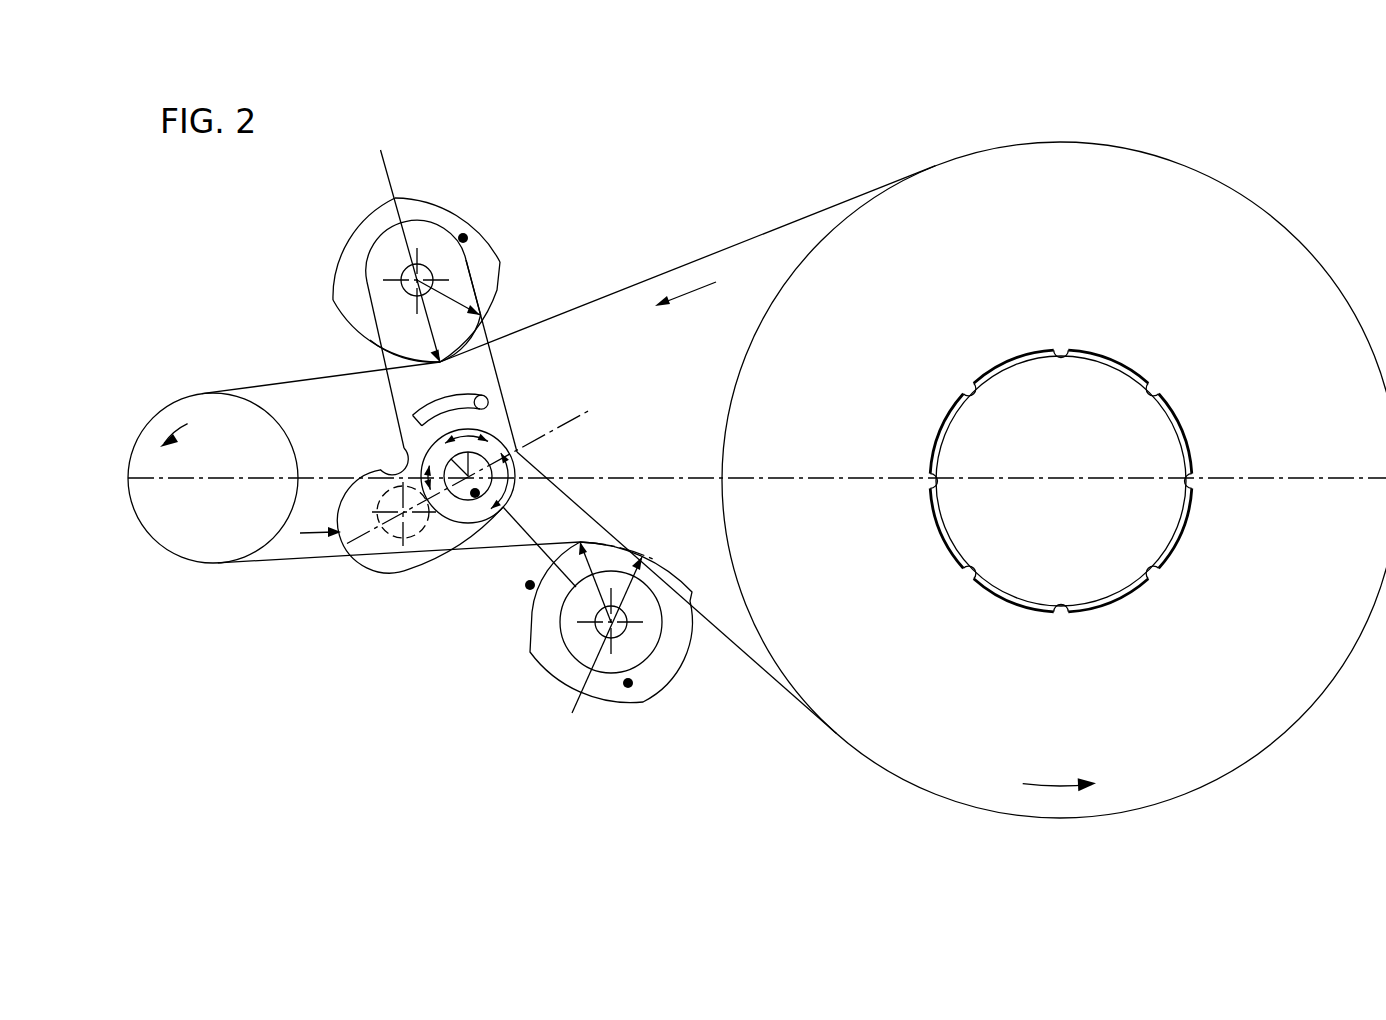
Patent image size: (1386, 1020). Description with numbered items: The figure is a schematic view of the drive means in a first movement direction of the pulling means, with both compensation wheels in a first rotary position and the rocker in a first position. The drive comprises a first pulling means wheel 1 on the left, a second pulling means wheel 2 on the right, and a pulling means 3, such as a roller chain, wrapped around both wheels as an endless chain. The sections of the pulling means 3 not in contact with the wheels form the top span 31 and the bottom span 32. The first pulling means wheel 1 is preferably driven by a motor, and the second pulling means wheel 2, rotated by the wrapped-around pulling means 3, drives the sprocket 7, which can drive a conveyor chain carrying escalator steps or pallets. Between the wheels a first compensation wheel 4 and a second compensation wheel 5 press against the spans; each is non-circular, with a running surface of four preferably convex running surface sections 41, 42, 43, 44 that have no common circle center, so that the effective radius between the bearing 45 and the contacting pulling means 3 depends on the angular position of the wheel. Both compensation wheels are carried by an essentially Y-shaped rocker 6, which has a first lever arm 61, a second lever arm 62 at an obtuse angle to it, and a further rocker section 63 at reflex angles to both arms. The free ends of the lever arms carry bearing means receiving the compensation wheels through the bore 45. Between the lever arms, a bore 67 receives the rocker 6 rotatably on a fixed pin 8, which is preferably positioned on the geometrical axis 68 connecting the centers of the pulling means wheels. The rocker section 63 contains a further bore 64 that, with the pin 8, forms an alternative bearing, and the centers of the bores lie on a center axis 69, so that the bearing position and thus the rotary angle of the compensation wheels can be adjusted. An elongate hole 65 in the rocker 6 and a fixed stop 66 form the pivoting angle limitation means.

The first pulling means wheel 1 is at (268, 530).
The second pulling means wheel 2 is at (736, 545).
The pulling means 3 is at (565, 450).
The top span 31 is at (266, 383).
The bottom span 32 is at (298, 560).
The first compensation wheel 4 is at (429, 256).
The running surface section 41 is at (355, 338).
The running surface section 42 is at (352, 240).
The running surface section 43 is at (447, 200).
The running surface section 44 is at (503, 292).
The bearing 45 is at (415, 275).
The second compensation wheel 5 is at (628, 683).
The rocker 6 is at (453, 462).
The first lever arm 61 is at (399, 436).
The second lever arm 62 is at (497, 580).
The rocker section 63 is at (357, 545).
The bore 64 is at (403, 535).
The elongate hole 65 is at (410, 405).
The fixed stop 66 is at (490, 398).
The bore 67 is at (480, 452).
The geometrical axis 68 is at (622, 470).
The center axis 69 is at (548, 438).
The sprocket 7 is at (1110, 348).
The pin 8 is at (446, 594).